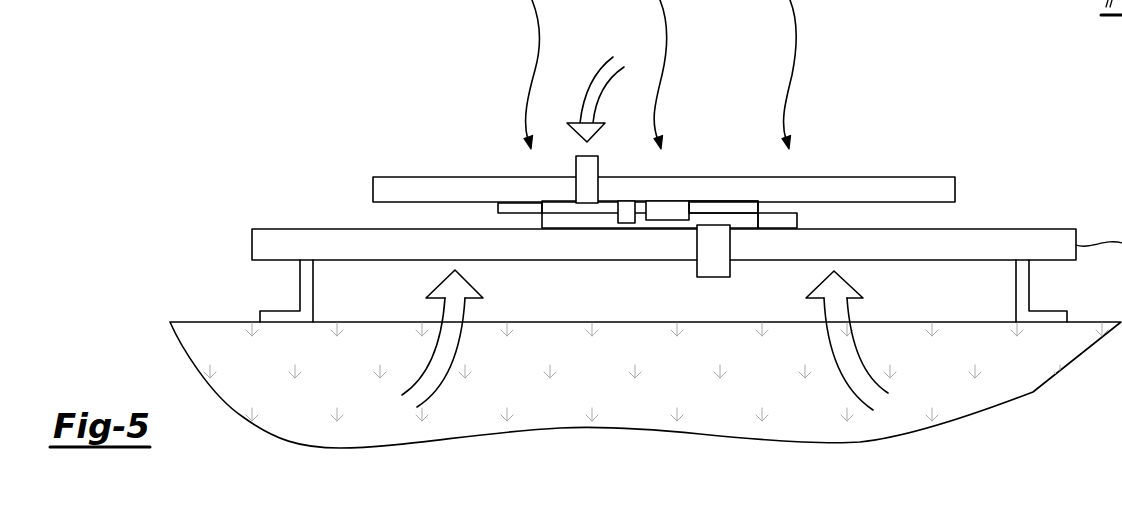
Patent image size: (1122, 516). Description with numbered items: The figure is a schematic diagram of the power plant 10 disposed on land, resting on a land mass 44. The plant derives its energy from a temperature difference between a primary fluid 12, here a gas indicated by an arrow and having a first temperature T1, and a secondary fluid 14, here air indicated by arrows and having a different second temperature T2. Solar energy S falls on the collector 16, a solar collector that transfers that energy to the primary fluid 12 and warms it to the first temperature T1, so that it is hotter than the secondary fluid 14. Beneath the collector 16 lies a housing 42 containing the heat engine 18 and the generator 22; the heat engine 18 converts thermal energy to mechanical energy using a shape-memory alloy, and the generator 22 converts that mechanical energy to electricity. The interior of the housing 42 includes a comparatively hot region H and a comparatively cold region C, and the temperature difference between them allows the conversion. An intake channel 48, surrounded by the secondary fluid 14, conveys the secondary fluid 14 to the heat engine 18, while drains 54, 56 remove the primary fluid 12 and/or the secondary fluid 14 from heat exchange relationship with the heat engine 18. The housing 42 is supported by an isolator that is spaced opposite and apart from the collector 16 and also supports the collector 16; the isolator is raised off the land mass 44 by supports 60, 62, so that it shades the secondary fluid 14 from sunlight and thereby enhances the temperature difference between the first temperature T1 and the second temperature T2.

The power plant 10 is at (1033, 113).
The primary fluid 12 is at (584, 92).
The secondary fluid 14 is at (466, 312).
The collector 16 is at (955, 190).
The heat engine 18 is at (627, 207).
The generator 22 is at (663, 208).
The housing 42 is at (707, 207).
The land mass 44 is at (685, 387).
The intake channel 48 is at (723, 263).
The drain 54 is at (498, 208).
The drain 56 is at (797, 222).
The support 60 is at (1029, 285).
The support 62 is at (300, 285).
The solar energy S is at (539, 30).
The first temperature T1 is at (634, 50).
The second temperature T2 is at (375, 419).
The hot region H is at (557, 207).
The cold region C is at (563, 222).